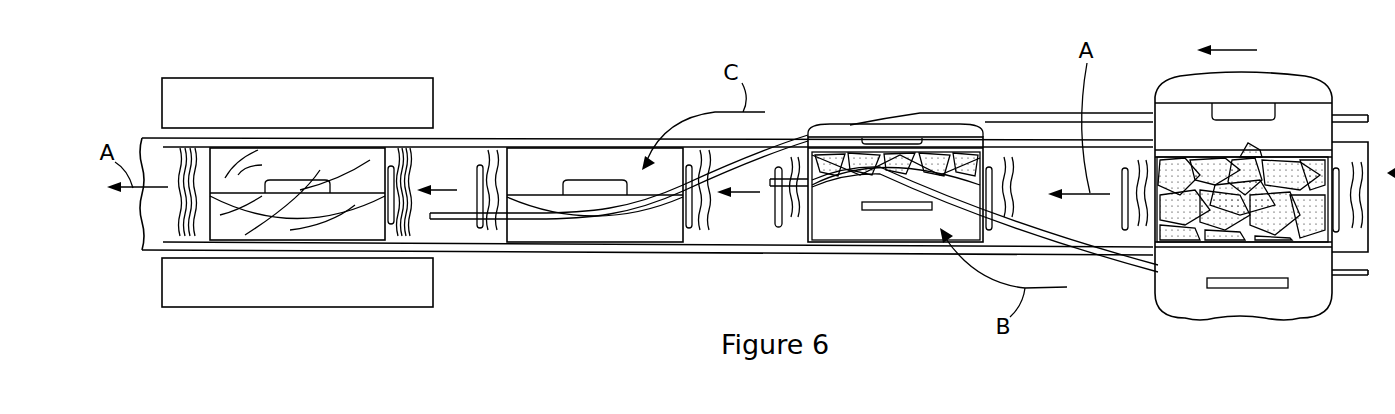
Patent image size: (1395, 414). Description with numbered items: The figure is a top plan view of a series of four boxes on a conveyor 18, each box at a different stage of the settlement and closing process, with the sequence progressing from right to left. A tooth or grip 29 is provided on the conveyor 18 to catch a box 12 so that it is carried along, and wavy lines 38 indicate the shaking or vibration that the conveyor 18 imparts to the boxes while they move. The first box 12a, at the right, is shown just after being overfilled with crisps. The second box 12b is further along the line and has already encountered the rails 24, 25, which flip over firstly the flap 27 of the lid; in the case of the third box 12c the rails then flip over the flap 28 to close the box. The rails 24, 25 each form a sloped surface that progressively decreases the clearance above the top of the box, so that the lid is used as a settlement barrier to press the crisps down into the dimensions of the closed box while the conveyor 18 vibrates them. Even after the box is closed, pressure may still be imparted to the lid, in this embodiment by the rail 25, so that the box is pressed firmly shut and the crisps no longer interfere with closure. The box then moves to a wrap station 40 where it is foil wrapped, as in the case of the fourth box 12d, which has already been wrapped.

The box 12 is at (1310, 153).
The first box 12a is at (1224, 331).
The second box 12b is at (895, 217).
The third box 12c is at (595, 190).
The fourth box 12d is at (385, 165).
The conveyor 18 is at (1362, 237).
The rail 24 is at (1118, 260).
The rail 25 is at (1003, 118).
The flap 27 is at (826, 234).
The flap 28 is at (552, 167).
The tooth or grip 29 is at (773, 212).
The wavy lines 38 is at (488, 157).
The wrap station 40 is at (272, 92).